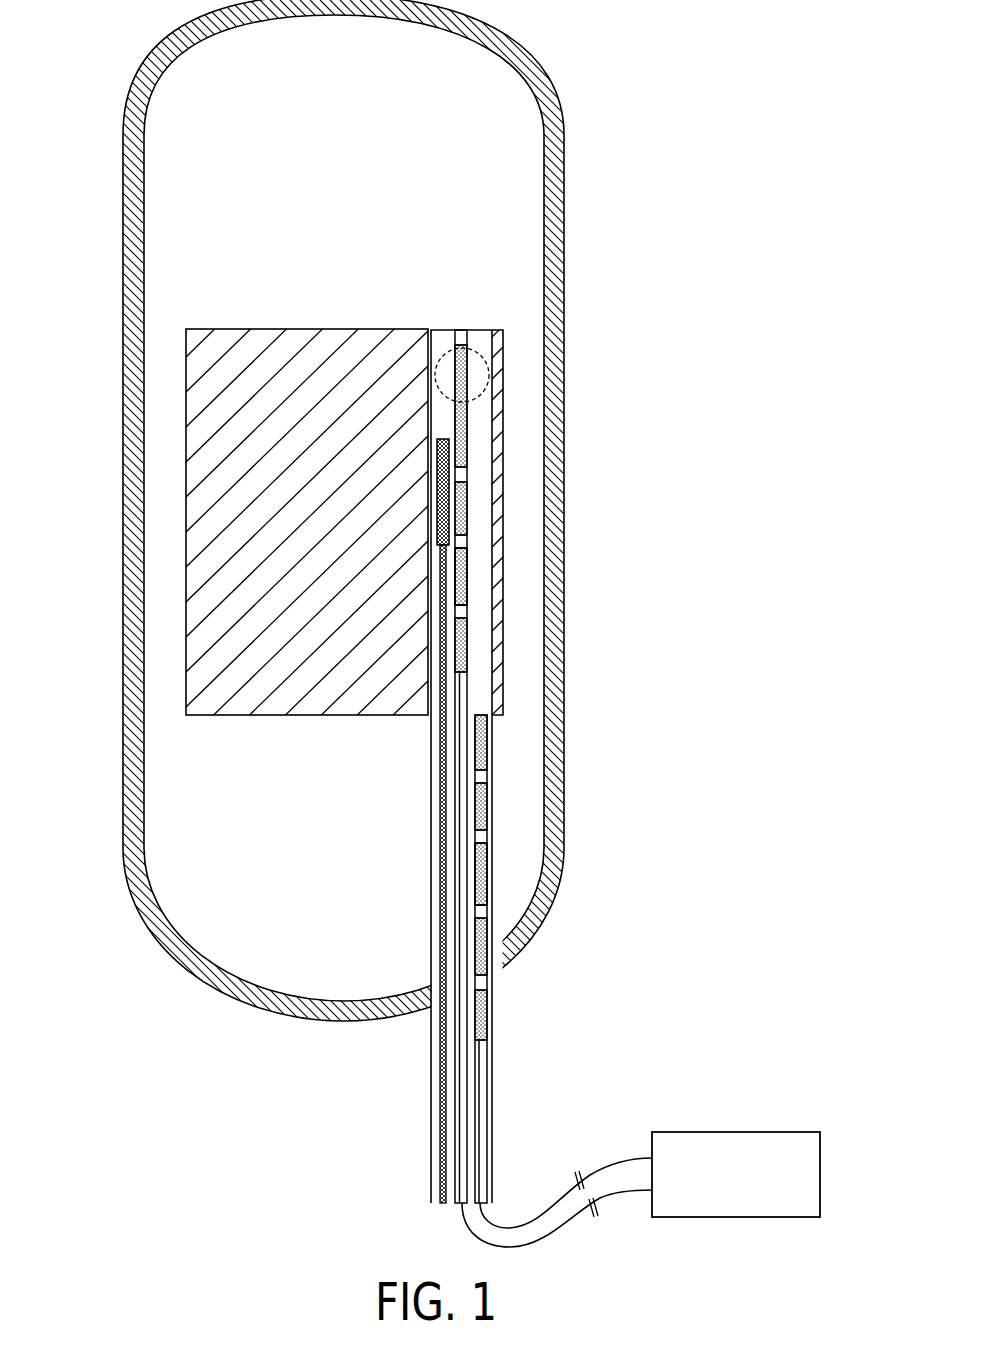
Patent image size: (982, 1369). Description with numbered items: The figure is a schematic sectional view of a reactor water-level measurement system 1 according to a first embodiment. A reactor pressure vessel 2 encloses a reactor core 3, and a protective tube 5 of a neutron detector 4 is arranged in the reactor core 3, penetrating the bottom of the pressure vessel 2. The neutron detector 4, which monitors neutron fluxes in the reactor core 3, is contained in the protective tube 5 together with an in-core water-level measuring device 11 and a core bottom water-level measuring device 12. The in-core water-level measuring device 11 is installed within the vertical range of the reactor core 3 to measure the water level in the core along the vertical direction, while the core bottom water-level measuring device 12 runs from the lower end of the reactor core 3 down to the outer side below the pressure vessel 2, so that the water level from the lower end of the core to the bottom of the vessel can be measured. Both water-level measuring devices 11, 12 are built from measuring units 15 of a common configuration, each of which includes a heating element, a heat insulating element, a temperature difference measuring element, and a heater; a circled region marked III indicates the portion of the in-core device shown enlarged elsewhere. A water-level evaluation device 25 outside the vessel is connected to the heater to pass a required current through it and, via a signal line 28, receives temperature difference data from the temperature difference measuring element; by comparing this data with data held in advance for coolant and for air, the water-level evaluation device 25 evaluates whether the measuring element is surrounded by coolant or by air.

The reactor water-level measurement system 1 is at (495, 601).
The reactor pressure vessel 2 is at (126, 172).
The reactor core 3 is at (186, 383).
The neutron detector 4 is at (443, 439).
The protective tube 5 is at (493, 512).
The in-core water-level measuring device 11 is at (472, 335).
The core bottom water-level measuring device 12 is at (483, 715).
The measuring unit 15 is at (468, 575).
The water-level evaluation device 25 is at (768, 1132).
The signal line 28 is at (545, 1237).
The detail region III is at (489, 376).